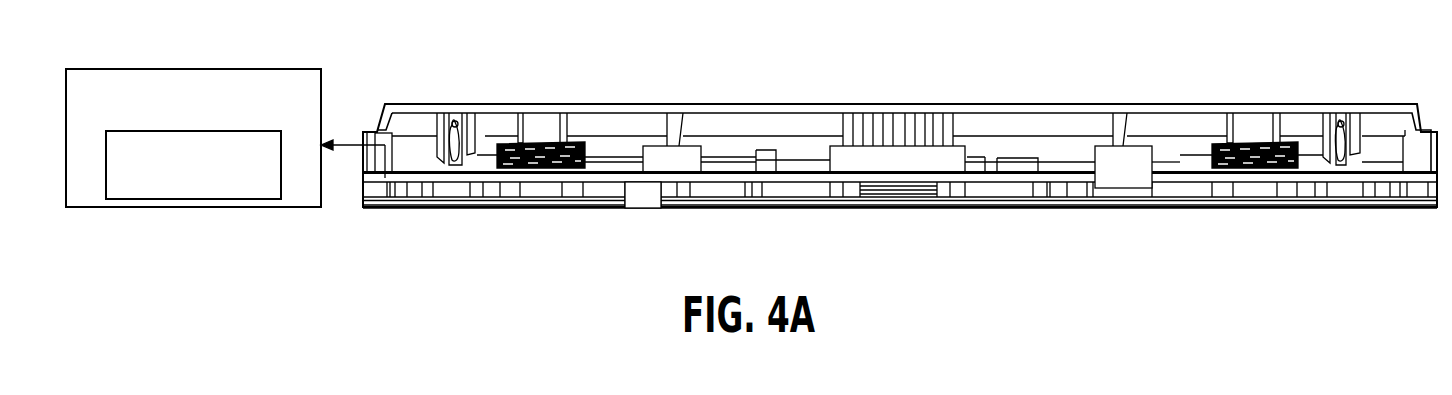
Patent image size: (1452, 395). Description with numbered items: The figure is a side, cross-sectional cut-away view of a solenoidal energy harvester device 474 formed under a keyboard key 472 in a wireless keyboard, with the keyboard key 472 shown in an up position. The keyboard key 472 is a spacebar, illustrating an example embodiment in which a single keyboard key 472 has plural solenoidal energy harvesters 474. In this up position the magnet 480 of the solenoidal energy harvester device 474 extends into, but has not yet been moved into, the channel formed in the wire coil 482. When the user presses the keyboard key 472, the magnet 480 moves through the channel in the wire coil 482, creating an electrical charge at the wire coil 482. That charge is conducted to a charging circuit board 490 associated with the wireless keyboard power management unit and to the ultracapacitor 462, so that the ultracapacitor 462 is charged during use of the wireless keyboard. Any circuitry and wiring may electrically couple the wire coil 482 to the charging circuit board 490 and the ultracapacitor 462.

The charging circuit board 490 is at (152, 69).
The ultracapacitor 462 is at (161, 199).
The keyboard key 472 is at (709, 112).
The solenoidal energy harvester device 474 is at (542, 211).
The magnet 480 is at (540, 128).
The wire coil 482 is at (575, 142).